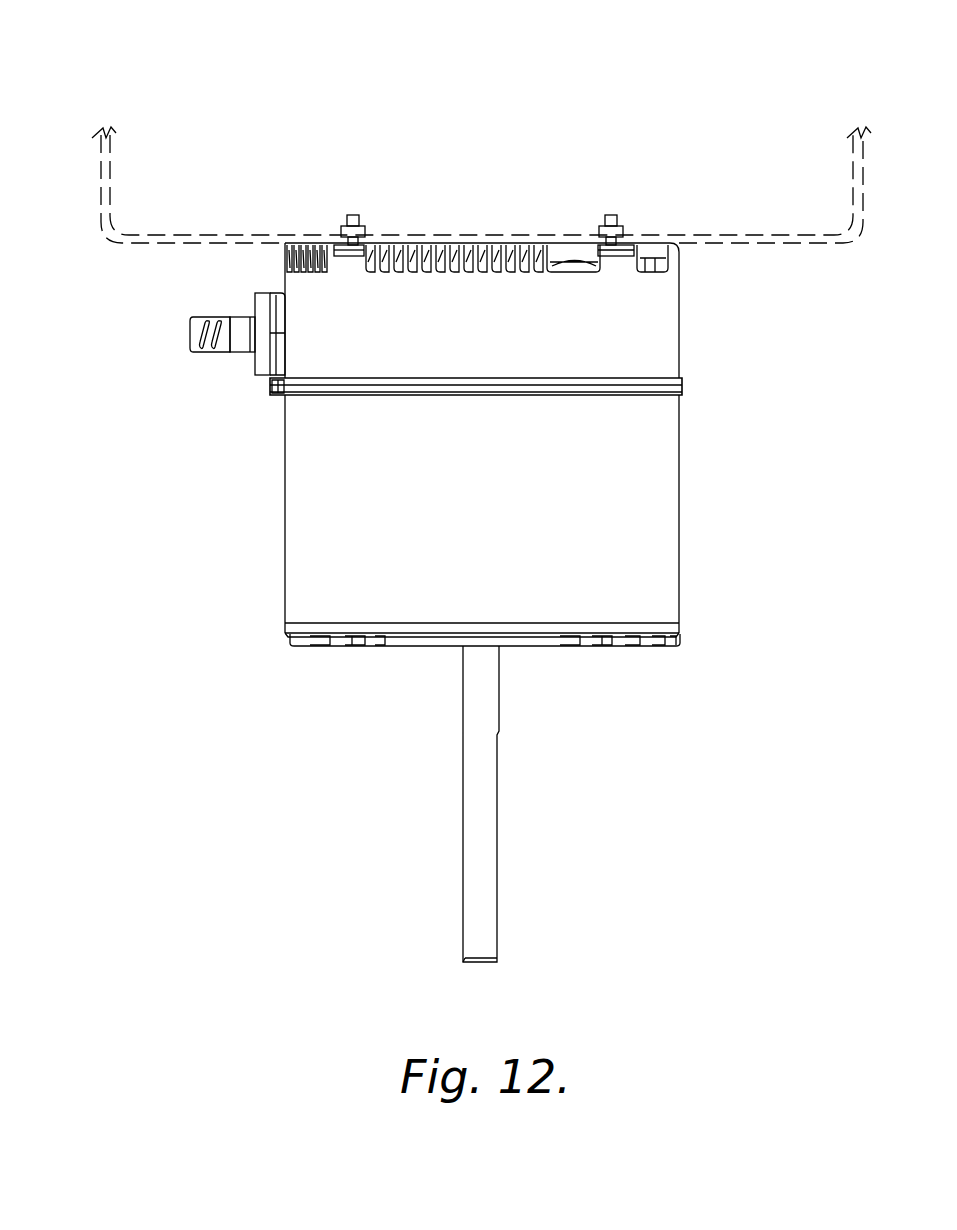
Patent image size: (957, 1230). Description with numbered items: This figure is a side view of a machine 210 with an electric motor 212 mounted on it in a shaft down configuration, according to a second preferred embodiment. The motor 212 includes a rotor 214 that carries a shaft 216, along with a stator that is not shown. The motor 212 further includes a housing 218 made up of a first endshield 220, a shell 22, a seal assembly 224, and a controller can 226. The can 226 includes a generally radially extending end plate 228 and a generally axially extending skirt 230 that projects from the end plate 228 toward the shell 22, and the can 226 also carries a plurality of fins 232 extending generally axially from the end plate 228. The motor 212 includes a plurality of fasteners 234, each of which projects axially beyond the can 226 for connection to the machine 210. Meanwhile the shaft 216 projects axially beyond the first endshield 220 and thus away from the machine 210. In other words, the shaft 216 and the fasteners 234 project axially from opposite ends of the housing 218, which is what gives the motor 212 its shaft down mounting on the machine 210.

The machine 210 is at (146, 82).
The electric motor 212 is at (214, 644).
The rotor 214 is at (460, 804).
The shaft 216 is at (490, 810).
The housing 218 is at (450, 514).
The motor housing 22 is at (670, 543).
The first endshield 220 is at (551, 646).
The seal assembly 224 is at (689, 388).
The controller can 226 is at (684, 319).
The end plate 228 is at (510, 270).
The skirt 230 is at (657, 340).
The fins 232 is at (415, 245).
The fasteners 234 is at (627, 209).